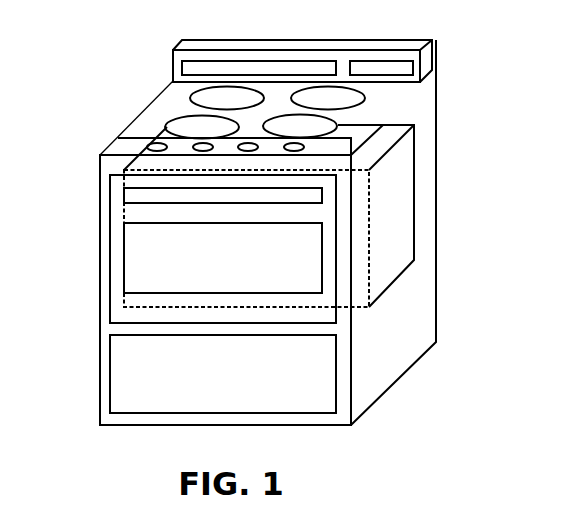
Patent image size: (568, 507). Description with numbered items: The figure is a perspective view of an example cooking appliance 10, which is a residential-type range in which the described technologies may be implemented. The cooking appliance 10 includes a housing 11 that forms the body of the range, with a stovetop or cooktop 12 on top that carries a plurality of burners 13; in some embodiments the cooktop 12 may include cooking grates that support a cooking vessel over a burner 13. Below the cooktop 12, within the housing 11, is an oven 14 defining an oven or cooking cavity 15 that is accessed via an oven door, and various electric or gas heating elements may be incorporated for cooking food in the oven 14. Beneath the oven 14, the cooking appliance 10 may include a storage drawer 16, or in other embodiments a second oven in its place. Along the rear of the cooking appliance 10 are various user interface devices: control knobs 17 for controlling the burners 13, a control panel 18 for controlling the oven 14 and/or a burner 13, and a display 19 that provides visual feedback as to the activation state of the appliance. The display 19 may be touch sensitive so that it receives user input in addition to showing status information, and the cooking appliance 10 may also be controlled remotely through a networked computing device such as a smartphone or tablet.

The cooking appliance 10 is at (86, 108).
The housing 11 is at (98, 400).
The cooktop 12 is at (379, 115).
The burners 13 is at (180, 116).
The oven 14 is at (219, 264).
The cooking cavity 15 is at (396, 228).
The storage drawer 16 is at (327, 352).
The control knobs 17 is at (155, 141).
The control panel 18 is at (200, 63).
The display 19 is at (392, 62).